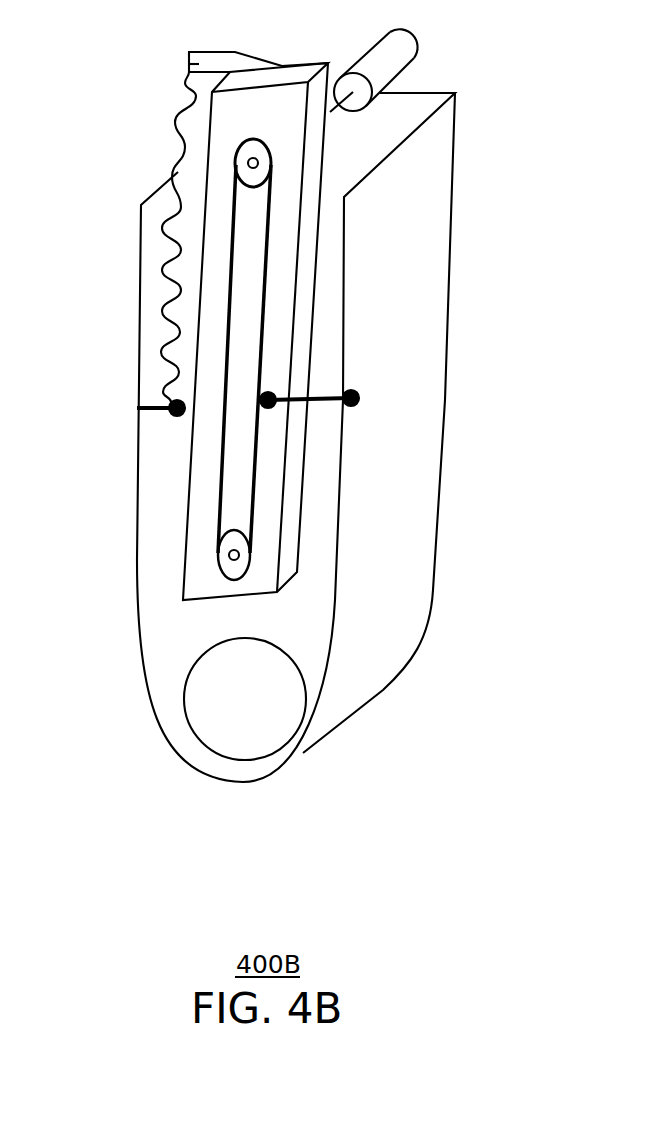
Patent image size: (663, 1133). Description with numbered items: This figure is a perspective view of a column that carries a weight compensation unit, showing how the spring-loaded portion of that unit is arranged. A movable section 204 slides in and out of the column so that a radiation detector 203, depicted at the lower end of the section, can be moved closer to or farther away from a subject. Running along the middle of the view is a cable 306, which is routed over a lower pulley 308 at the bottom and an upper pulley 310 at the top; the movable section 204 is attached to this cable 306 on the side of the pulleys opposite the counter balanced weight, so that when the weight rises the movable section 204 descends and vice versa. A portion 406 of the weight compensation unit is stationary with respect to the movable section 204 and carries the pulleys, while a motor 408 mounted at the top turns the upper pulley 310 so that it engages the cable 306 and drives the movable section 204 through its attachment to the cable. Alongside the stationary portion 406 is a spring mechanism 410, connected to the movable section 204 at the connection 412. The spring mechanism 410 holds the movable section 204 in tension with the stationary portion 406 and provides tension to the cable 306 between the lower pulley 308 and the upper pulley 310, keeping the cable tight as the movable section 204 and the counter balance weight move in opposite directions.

The radiation detector 203 is at (193, 737).
The movable section 204 is at (413, 506).
The cable 306 is at (227, 285).
The lower pulley 308 is at (228, 560).
The upper pulley 310 is at (252, 163).
The stationary portion 406 is at (302, 233).
The motor 408 is at (380, 64).
The spring mechanism 410 is at (175, 124).
The connection of spring mechanism to movable section 412 is at (152, 405).